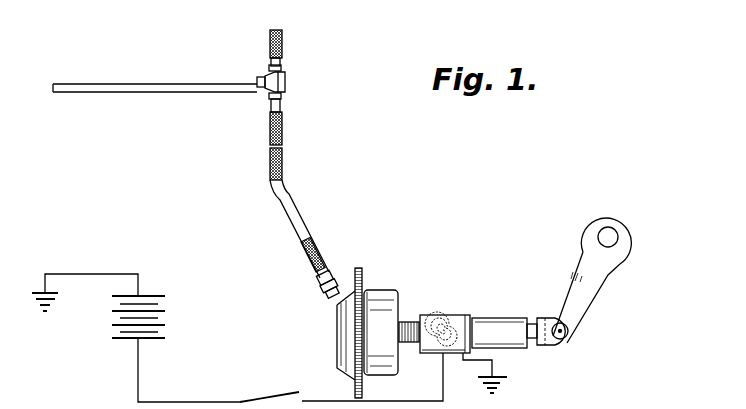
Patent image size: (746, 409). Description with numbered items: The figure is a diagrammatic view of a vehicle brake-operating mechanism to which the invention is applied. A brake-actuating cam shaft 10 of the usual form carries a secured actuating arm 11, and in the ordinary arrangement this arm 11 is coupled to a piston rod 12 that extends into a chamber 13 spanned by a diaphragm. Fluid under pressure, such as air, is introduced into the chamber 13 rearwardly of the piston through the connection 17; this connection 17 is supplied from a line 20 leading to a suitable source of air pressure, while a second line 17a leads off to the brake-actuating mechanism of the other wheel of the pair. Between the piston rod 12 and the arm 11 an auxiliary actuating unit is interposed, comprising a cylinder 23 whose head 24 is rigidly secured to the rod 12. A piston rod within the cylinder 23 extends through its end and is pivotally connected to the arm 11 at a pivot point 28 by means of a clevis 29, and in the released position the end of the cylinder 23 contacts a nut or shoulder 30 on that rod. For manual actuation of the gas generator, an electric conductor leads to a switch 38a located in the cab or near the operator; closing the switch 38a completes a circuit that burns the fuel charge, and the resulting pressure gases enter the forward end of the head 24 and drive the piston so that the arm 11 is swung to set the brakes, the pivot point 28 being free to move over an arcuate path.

The brake-actuating cam shaft 10 is at (610, 237).
The actuating arm 11 is at (576, 280).
The piston rod 12 is at (419, 326).
The chamber 13 is at (366, 292).
The connection 17 is at (327, 276).
The second line 17a is at (284, 45).
The line 20 is at (174, 90).
The cylinder 23 is at (490, 318).
The cylinder head 24 is at (461, 318).
The pivot point 28 is at (563, 339).
The clevis 29 is at (540, 320).
The nut or shoulder 30 is at (532, 344).
The switch 38a is at (277, 394).